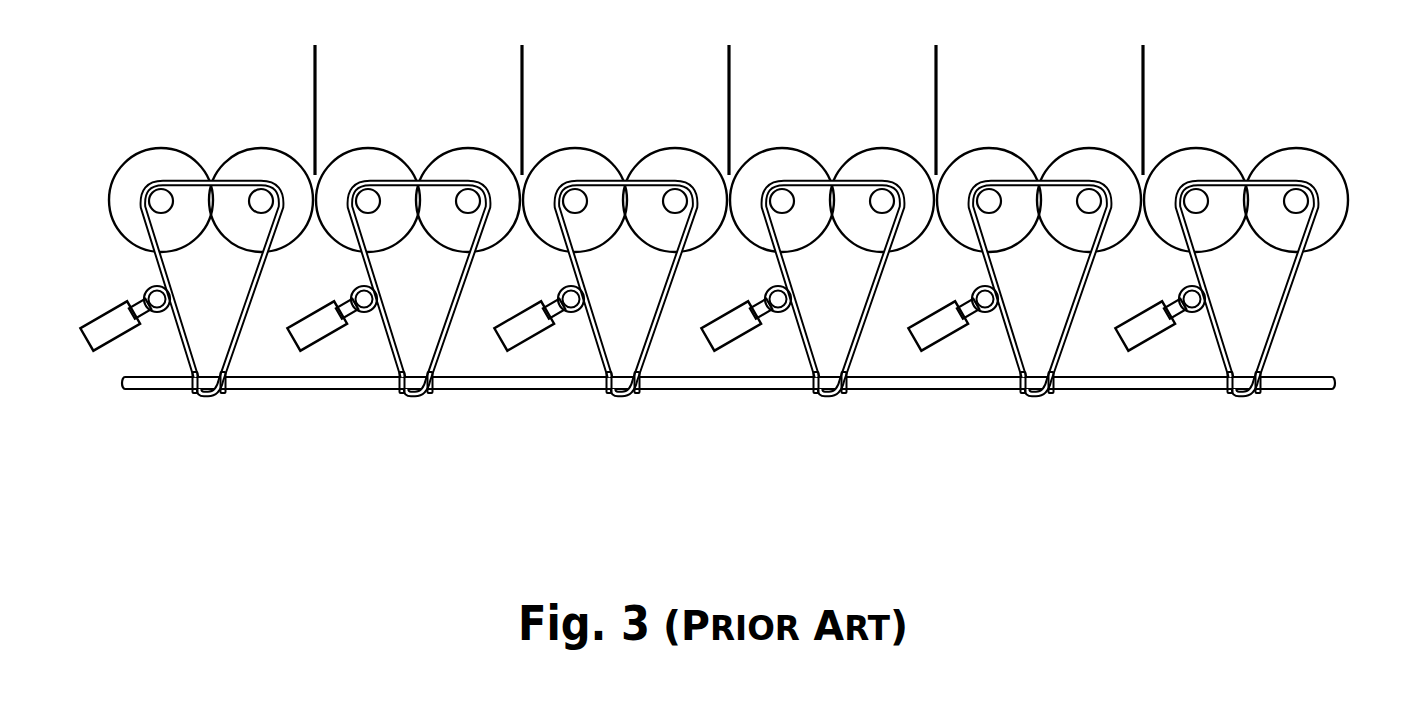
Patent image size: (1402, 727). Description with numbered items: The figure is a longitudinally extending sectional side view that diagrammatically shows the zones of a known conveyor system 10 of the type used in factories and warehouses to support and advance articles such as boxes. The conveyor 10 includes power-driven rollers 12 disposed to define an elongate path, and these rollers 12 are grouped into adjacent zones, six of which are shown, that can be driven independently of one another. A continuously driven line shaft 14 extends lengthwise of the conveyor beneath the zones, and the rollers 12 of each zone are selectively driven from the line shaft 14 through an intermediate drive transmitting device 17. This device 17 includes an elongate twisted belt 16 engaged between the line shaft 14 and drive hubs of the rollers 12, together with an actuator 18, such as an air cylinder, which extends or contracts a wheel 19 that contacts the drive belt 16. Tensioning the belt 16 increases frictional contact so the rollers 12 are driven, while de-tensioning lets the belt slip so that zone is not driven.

The conveyor system 10 is at (1348, 93).
The rollers 12 is at (728, 173).
The line shaft 14 is at (962, 390).
The twisted belt 16 is at (729, 288).
The intermediate drive transmitting device 17 is at (646, 299).
The actuator 18 is at (631, 315).
The wheel 19 is at (681, 323).